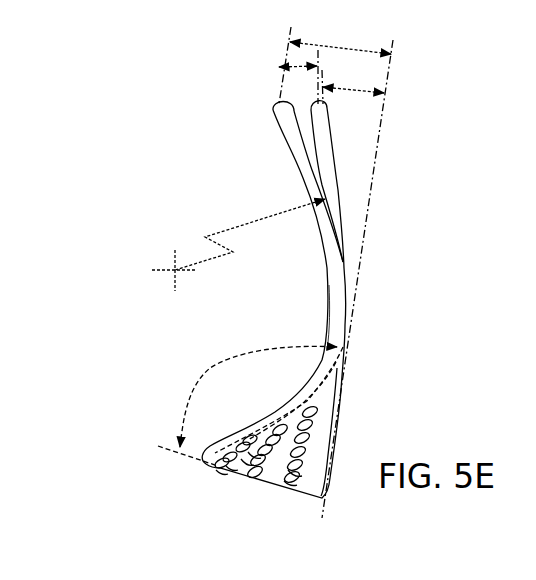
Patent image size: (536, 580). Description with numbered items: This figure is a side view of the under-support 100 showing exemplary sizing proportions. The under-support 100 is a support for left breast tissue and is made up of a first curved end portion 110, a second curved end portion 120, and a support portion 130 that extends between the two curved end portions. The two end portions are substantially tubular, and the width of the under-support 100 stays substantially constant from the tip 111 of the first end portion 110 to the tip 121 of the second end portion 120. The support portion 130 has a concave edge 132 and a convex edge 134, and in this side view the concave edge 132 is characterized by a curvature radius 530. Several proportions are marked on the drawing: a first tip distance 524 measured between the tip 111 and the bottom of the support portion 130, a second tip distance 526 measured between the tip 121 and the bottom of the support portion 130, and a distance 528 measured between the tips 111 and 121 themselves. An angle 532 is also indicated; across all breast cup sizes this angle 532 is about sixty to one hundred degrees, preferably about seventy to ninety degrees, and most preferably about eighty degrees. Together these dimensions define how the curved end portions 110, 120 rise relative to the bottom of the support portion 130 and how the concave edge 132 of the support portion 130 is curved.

The under-support 100 is at (292, 292).
The first curved end portion 110 is at (388, 209).
The tip of the first end portion 111 is at (324, 106).
The second curved end portion 120 is at (312, 223).
The tip of the second end portion 121 is at (274, 109).
The support portion 130 is at (323, 390).
The concave edge 132 is at (345, 324).
The convex edge 134 is at (240, 421).
The first tip distance 524 is at (353, 80).
The second tip distance 526 is at (340, 41).
The distance between tips 528 is at (296, 67).
The curvature radius 530 is at (238, 245).
The angle 532 is at (247, 402).